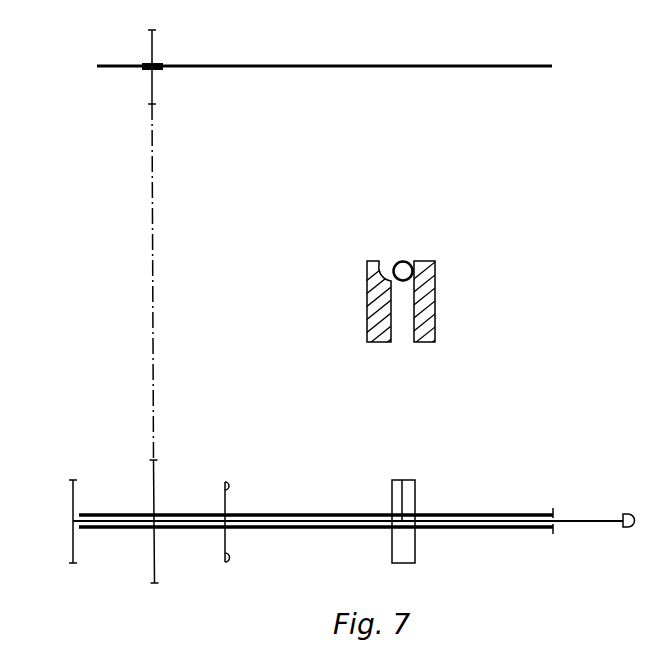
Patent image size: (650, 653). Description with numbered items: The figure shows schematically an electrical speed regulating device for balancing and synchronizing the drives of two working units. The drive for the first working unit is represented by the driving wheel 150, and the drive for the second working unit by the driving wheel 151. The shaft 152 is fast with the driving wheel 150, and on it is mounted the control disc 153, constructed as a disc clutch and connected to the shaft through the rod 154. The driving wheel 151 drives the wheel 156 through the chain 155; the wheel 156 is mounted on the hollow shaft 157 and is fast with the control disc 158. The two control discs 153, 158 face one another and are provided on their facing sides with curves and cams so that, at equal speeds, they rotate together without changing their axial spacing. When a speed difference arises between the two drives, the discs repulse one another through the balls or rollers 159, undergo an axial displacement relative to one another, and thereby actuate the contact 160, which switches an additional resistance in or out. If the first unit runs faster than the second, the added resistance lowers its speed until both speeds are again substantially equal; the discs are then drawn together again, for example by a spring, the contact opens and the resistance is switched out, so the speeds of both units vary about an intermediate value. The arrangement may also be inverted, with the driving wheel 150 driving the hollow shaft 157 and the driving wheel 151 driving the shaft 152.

The driving wheel 150 is at (71, 492).
The driving wheel 151 is at (153, 48).
The shaft 152 is at (106, 527).
The control disc 153 is at (428, 290).
The rod 154 is at (407, 497).
The chain 155 is at (153, 187).
The wheel 156 is at (156, 478).
The hollow shaft 157 is at (372, 299).
The control disc 158 is at (228, 492).
The balls or rollers 159 is at (402, 261).
The contact 160 is at (625, 513).